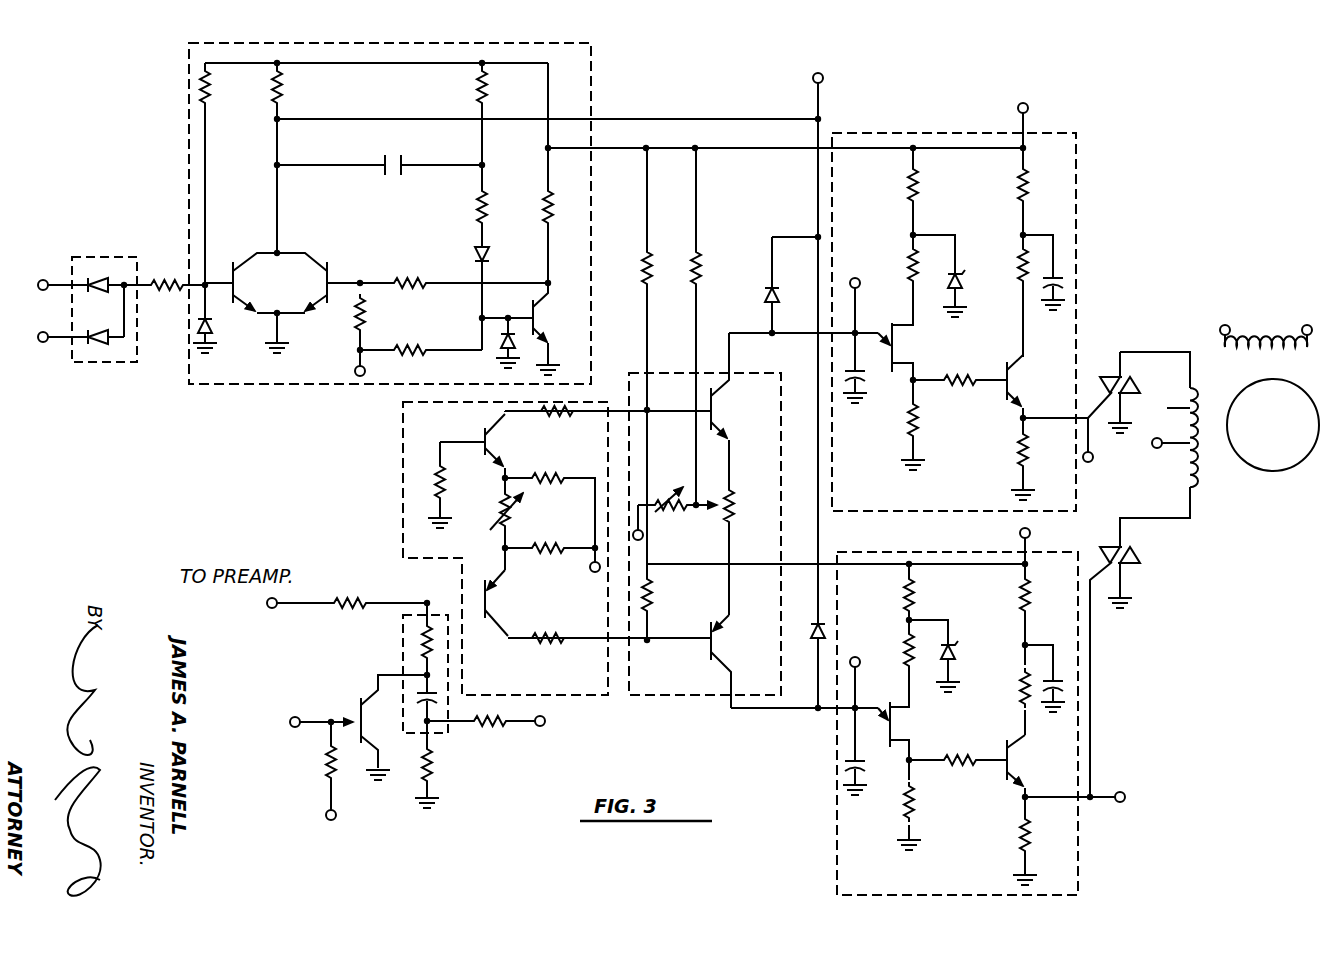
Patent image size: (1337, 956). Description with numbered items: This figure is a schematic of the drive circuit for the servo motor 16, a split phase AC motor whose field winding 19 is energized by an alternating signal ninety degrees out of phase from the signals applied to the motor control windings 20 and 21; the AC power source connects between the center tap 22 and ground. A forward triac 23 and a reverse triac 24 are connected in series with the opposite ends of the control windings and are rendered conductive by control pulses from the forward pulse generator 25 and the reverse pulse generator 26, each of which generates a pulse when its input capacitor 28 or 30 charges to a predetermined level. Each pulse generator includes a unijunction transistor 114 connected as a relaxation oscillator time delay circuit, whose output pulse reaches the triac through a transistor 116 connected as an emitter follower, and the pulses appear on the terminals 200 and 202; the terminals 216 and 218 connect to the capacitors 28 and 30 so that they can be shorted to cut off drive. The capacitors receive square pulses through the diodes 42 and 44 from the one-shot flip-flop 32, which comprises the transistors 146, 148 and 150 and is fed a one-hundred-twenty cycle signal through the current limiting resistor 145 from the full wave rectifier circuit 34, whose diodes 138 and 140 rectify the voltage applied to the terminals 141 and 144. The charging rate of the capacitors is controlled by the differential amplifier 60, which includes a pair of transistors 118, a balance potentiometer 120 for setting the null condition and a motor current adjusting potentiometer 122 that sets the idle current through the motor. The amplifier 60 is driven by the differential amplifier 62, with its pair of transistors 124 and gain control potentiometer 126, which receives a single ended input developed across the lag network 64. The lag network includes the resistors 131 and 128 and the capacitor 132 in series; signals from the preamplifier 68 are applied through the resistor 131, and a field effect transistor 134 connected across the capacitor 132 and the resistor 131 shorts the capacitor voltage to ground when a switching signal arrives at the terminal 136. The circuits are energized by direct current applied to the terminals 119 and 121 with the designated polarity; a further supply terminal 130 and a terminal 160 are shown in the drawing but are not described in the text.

The servo motor 16 is at (1280, 471).
The field winding 19 is at (1262, 348).
The motor control winding 20 is at (1190, 476).
The motor control winding 21 is at (1166, 409).
The center tap 22 is at (1152, 448).
The triac 23 is at (1135, 556).
The triac 24 is at (1112, 375).
The forward pulse generator 25 is at (1080, 860).
The reverse pulse generator 26 is at (1076, 160).
The input capacitor 28 is at (845, 762).
The input capacitor 30 is at (858, 365).
The one-shot flip-flop 32 is at (591, 75).
The full wave rectifier circuit 34 is at (84, 257).
The diode 42 is at (812, 625).
The diode 44 is at (763, 296).
The differential amplifier 60 is at (683, 697).
The differential amplifier 62 is at (403, 456).
The lag network 64 is at (448, 737).
The preamplifier 68 is at (324, 596).
The unijunction transistor 114 is at (918, 330).
The transistor 116 is at (1018, 369).
The transistors 118 is at (731, 390).
The terminal 119 is at (1019, 103).
The balance potentiometer 120 is at (736, 487).
The terminal 121 is at (356, 379).
The motor current adjusting potentiometer 122 is at (648, 500).
The transistors 124 is at (502, 428).
The potentiometer 126 is at (515, 520).
The resistor 128 is at (420, 639).
The positive supply terminal 130 is at (502, 730).
The resistor 131 is at (357, 598).
The capacitor 132 is at (445, 700).
The field effect transistor 134 is at (358, 708).
The terminal 136 is at (295, 728).
The diode 138 is at (98, 347).
The diode 140 is at (108, 281).
The terminal 141 is at (44, 279).
The terminal 144 is at (43, 343).
The current limiting resistor 145 is at (166, 292).
The transistor 146 is at (248, 283).
The transistor 148 is at (318, 267).
The transistor 150 is at (537, 312).
The supply terminal 160 is at (825, 75).
The terminal 200 is at (1126, 794).
The terminal 202 is at (1090, 462).
The terminal 216 is at (857, 278).
The terminal 218 is at (862, 650).